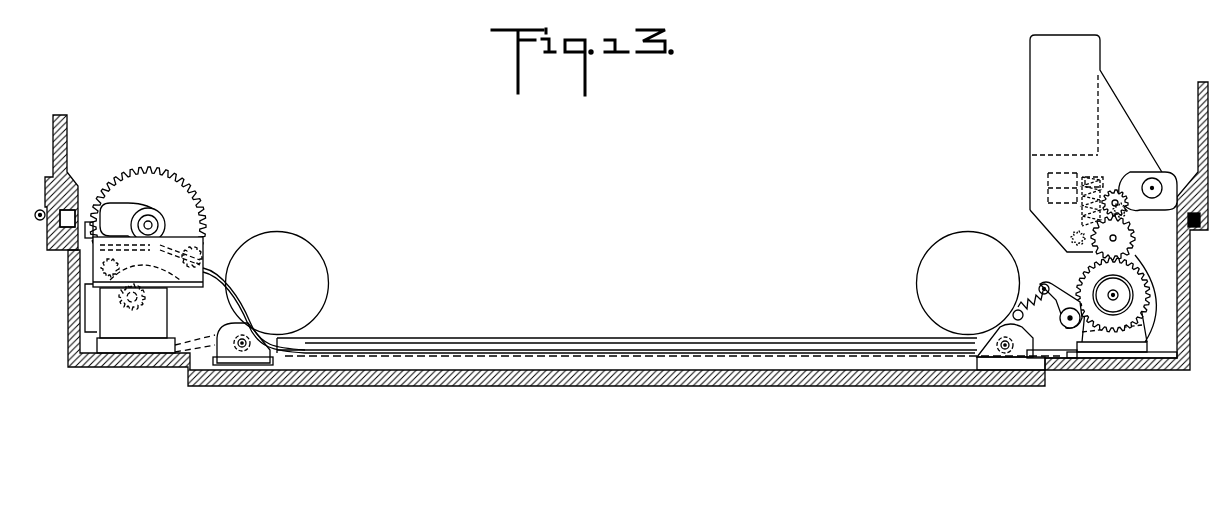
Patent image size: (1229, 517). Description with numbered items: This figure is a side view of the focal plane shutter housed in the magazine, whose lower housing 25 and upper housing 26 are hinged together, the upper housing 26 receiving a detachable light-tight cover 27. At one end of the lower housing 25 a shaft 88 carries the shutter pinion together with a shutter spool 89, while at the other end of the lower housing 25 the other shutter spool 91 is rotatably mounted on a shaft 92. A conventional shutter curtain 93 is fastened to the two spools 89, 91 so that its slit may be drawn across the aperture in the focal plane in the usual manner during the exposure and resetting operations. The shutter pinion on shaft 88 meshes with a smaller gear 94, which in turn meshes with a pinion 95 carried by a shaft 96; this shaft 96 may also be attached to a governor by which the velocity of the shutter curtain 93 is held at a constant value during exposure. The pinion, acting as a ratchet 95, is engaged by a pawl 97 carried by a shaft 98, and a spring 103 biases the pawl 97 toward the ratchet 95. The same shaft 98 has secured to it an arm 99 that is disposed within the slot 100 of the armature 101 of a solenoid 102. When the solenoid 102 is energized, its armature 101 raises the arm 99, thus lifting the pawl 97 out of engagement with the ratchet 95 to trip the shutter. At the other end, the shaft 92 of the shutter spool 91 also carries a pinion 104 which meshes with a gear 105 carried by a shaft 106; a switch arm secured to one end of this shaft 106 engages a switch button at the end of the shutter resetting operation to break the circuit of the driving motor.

The lower housing 25 is at (72, 282).
The upper housing 26 is at (67, 130).
The light-tight cover 27 is at (39, 221).
The shaft 88 is at (1113, 320).
The shutter spool 89 is at (1150, 335).
The shutter spool 91 is at (151, 302).
The shaft 92 is at (104, 290).
The shutter curtain 93 is at (206, 372).
The gear 94 is at (1130, 242).
The pinion or ratchet 95 is at (1126, 212).
The shaft 96 is at (1128, 210).
The pawl 97 is at (1146, 172).
The shaft 98 is at (1154, 185).
The arm 99 is at (1046, 166).
The slot 100 is at (1082, 161).
The armature 101 is at (1048, 197).
The solenoid 102 is at (1100, 42).
The spring 103 is at (1098, 215).
The pinion 104 is at (132, 310).
The gear 105 is at (158, 168).
The shaft 106 is at (151, 224).